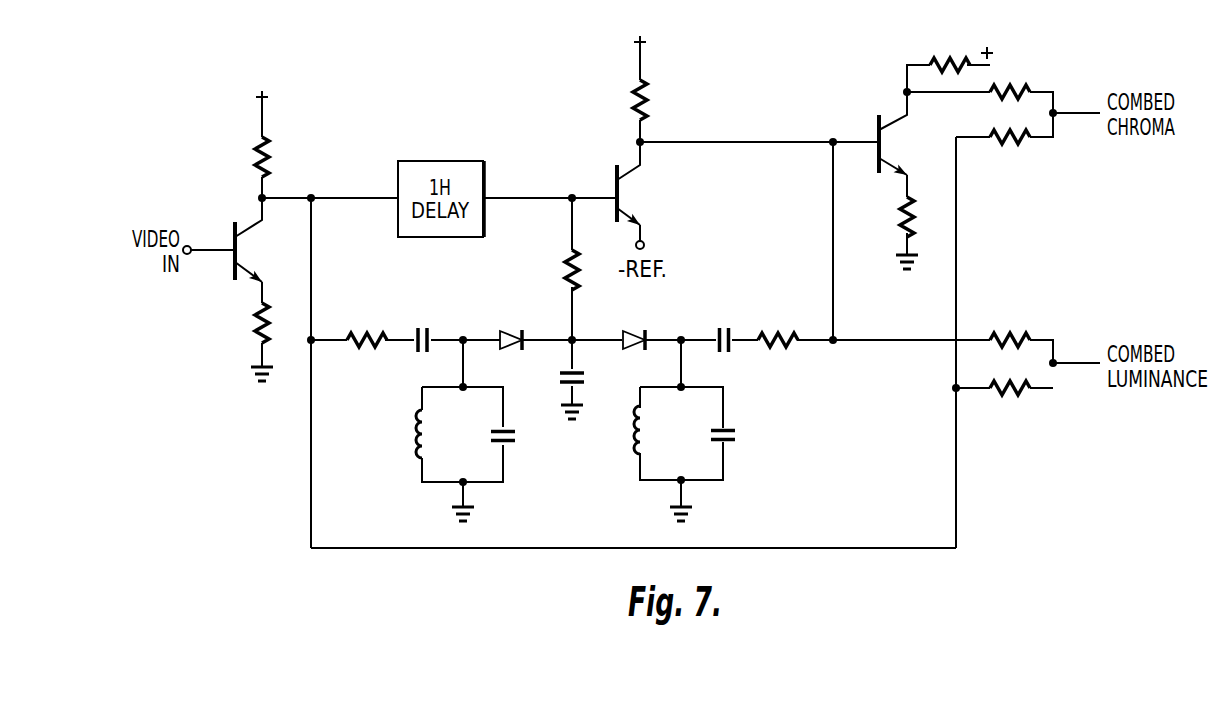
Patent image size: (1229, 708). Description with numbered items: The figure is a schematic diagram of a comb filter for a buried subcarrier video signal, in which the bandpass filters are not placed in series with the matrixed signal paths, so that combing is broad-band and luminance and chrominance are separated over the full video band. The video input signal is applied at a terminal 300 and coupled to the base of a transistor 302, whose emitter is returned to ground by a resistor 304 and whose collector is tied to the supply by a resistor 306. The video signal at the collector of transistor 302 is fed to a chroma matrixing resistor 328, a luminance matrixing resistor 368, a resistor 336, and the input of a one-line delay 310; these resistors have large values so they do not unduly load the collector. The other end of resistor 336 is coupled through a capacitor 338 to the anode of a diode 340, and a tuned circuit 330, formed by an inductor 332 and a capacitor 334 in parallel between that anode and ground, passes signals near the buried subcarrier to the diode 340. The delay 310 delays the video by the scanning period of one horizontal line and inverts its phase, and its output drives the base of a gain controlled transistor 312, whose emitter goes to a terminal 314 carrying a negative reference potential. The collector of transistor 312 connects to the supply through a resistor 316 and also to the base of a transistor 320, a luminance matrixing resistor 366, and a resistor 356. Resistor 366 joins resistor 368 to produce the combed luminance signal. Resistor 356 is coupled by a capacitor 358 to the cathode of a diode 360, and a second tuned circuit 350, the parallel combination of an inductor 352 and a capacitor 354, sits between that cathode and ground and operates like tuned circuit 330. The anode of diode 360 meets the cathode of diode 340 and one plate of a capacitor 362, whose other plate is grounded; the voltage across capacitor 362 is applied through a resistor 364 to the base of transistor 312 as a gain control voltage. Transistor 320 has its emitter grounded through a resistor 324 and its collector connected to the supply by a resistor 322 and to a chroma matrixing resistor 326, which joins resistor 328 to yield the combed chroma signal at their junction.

The terminal 300 is at (187, 245).
The transistor 302 is at (241, 262).
The resistor 304 is at (255, 324).
The resistor 306 is at (273, 157).
The 1-H delay 310 is at (441, 161).
The gain controlled transistor 312 is at (623, 208).
The terminal 314 is at (644, 243).
The resistor 316 is at (648, 100).
The transistor 320 is at (883, 155).
The resistor 322 is at (953, 64).
The resistor 324 is at (902, 224).
The chroma matrixing resistor 326 is at (1005, 90).
The chroma matrixing resistor 328 is at (1009, 144).
The tuned circuit 330 is at (477, 450).
The inductor 332 is at (416, 431).
The capacitor 334 is at (511, 444).
The resistor 336 is at (370, 332).
The capacitor 338 is at (427, 334).
The diode 340 is at (504, 332).
The second tuned circuit 350 is at (697, 449).
The inductor 352 is at (636, 430).
The capacitor 354 is at (731, 442).
The resistor 356 is at (768, 332).
The capacitor 358 is at (714, 328).
The diode 360 is at (640, 328).
The capacitor 362 is at (581, 372).
The resistor 364 is at (565, 272).
The luminance matrixing resistor 366 is at (1008, 332).
The luminance matrixing resistor 368 is at (1009, 394).